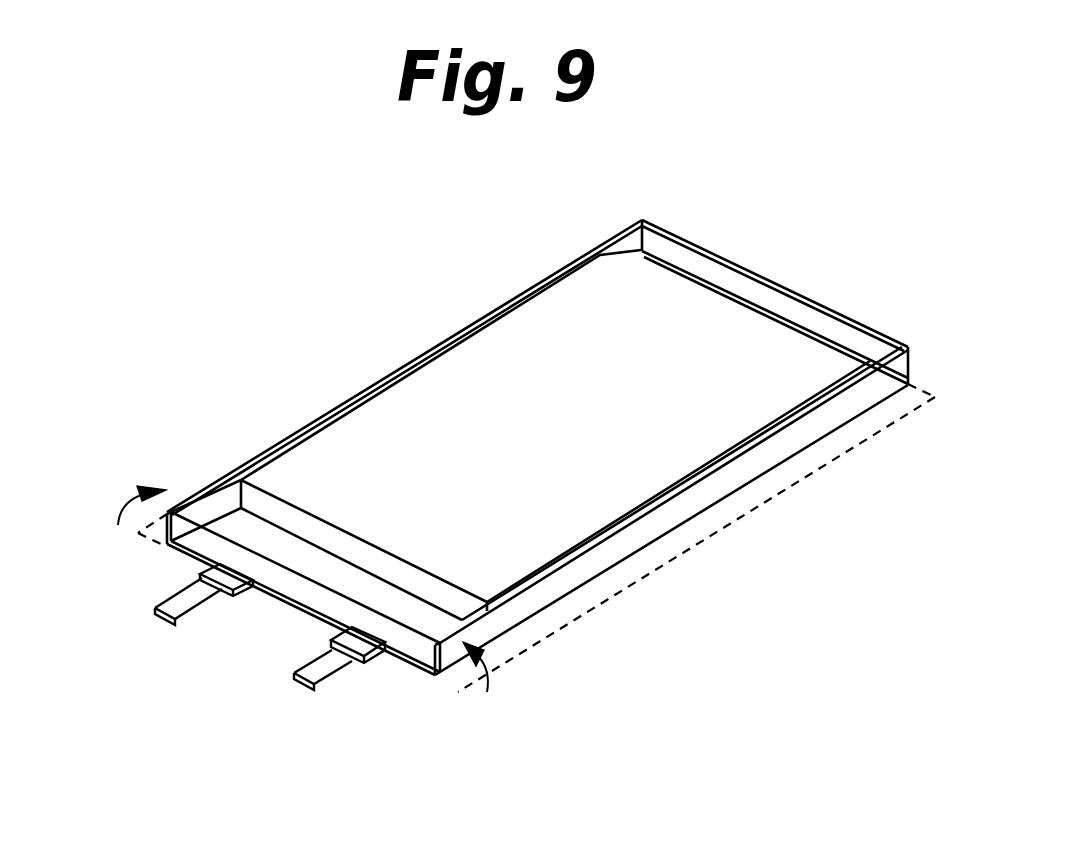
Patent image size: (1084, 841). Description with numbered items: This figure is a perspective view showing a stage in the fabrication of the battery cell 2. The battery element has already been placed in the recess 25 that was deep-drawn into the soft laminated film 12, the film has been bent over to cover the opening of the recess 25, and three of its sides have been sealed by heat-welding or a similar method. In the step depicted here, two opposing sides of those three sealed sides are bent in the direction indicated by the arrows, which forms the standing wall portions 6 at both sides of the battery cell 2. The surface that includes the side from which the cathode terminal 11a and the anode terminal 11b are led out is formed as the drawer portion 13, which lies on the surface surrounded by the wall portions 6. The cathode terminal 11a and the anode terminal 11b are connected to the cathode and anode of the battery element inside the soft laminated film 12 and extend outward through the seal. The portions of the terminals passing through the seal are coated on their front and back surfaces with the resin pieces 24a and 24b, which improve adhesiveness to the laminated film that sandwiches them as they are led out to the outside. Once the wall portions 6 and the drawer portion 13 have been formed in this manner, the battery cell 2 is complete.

The battery cell 2 is at (915, 199).
The wall portions 6 is at (692, 497).
The soft laminated film 12 is at (787, 319).
The drawer portion 13 is at (310, 576).
The recess 25 is at (462, 372).
The resin piece 24a is at (391, 668).
The resin piece 24b is at (207, 577).
The cathode terminal 11a is at (293, 688).
The anode terminal 11b is at (162, 622).